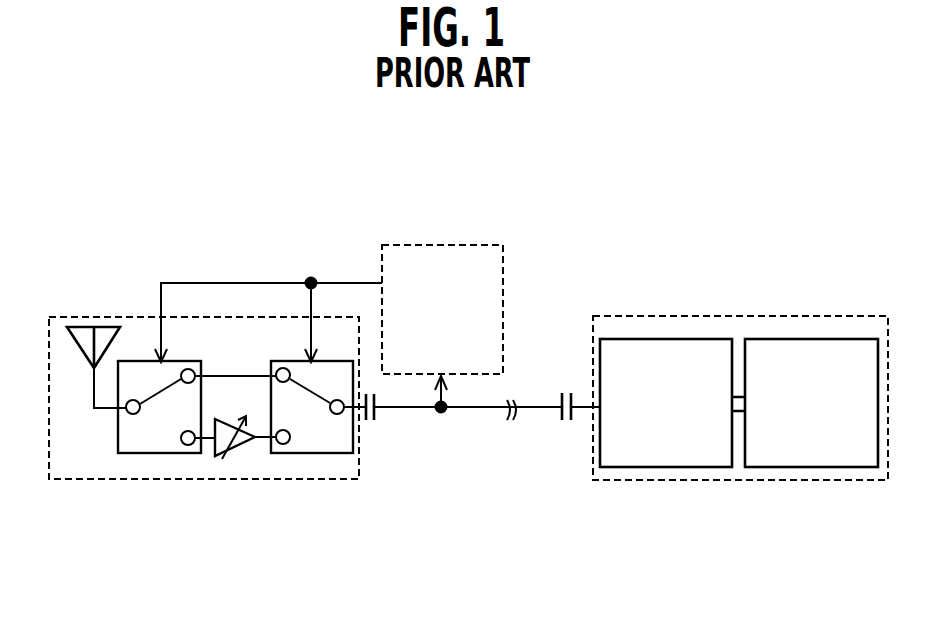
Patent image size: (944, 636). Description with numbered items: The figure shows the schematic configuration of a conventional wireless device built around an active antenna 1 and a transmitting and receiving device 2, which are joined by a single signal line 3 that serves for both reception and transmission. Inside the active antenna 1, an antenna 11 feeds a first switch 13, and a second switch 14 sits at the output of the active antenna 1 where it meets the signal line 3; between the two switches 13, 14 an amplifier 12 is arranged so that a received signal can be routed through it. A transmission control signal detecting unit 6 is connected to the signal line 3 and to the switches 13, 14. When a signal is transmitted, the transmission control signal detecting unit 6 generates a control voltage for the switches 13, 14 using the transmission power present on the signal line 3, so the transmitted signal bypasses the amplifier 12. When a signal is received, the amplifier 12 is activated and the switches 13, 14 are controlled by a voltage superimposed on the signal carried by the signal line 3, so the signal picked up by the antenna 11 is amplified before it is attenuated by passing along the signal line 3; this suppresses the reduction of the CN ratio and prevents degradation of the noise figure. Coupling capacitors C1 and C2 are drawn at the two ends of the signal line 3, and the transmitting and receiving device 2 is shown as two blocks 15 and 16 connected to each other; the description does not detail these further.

The active antenna 1 is at (210, 314).
The transmitting and receiving device 2 is at (723, 314).
The signal line 3 is at (477, 408).
The transmission control signal detecting unit 6 is at (433, 245).
The antenna 11 is at (83, 332).
The amplifier 12 is at (238, 453).
The switch 13 is at (128, 453).
The switch 14 is at (320, 453).
The circuit block 15 is at (663, 468).
The circuit block 16 is at (792, 468).
The capacitor C1 is at (381, 428).
The capacitor C2 is at (561, 428).